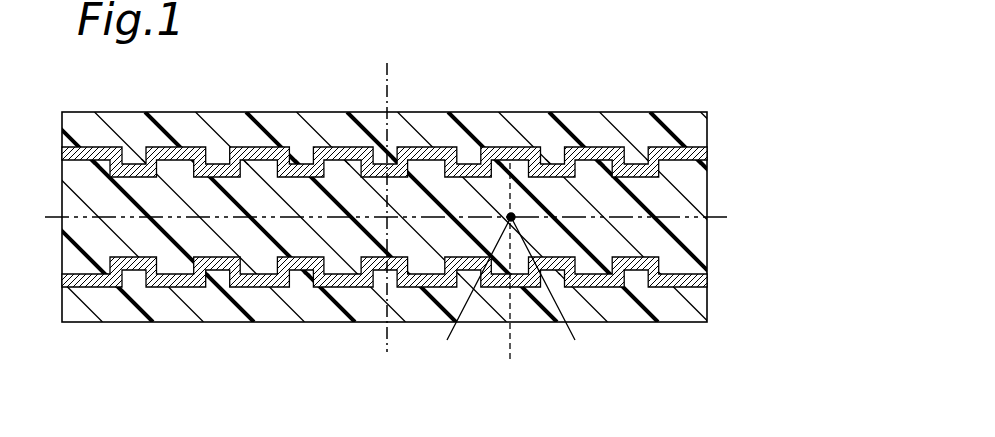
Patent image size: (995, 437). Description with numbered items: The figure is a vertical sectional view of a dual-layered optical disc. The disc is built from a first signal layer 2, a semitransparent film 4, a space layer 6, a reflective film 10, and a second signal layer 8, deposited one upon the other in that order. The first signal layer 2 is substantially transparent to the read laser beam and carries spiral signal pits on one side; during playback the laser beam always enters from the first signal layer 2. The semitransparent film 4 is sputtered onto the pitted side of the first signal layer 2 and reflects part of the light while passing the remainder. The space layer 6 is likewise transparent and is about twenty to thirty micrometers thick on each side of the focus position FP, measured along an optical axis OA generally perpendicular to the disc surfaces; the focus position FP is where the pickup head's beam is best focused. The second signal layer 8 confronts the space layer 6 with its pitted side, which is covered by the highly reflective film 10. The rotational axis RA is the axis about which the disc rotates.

The first signal layer 2 is at (635, 313).
The semitransparent film 4 is at (688, 290).
The space layer 6 is at (688, 245).
The second signal layer 8 is at (642, 131).
The reflective film 10 is at (691, 147).
The focus position FP is at (511, 217).
The optical axis OA is at (547, 148).
The rotational axis RA is at (387, 78).